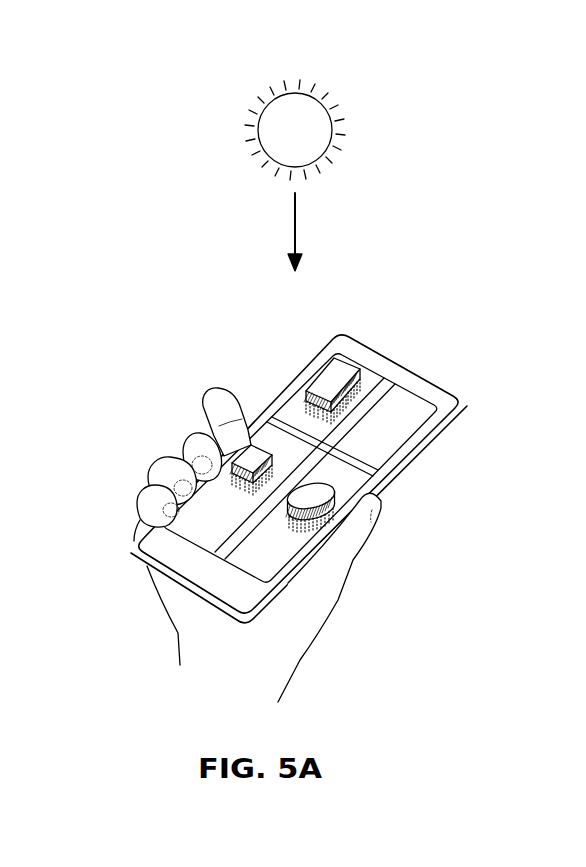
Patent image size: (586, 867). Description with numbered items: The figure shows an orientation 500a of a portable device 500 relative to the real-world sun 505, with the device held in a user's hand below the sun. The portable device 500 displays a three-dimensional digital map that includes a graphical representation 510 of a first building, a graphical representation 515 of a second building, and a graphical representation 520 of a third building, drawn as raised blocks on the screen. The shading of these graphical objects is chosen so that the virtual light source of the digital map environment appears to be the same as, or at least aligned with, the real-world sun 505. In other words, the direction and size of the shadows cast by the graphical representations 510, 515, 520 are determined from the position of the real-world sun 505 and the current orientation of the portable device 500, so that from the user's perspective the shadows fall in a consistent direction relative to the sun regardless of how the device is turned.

The portable device 500 is at (131, 543).
The orientation 500a is at (456, 90).
The real-world sun 505 is at (259, 103).
The graphical representation of a first building 510 is at (335, 360).
The graphical representation of a second building 515 is at (247, 447).
The graphical representation of a third building 520 is at (323, 485).